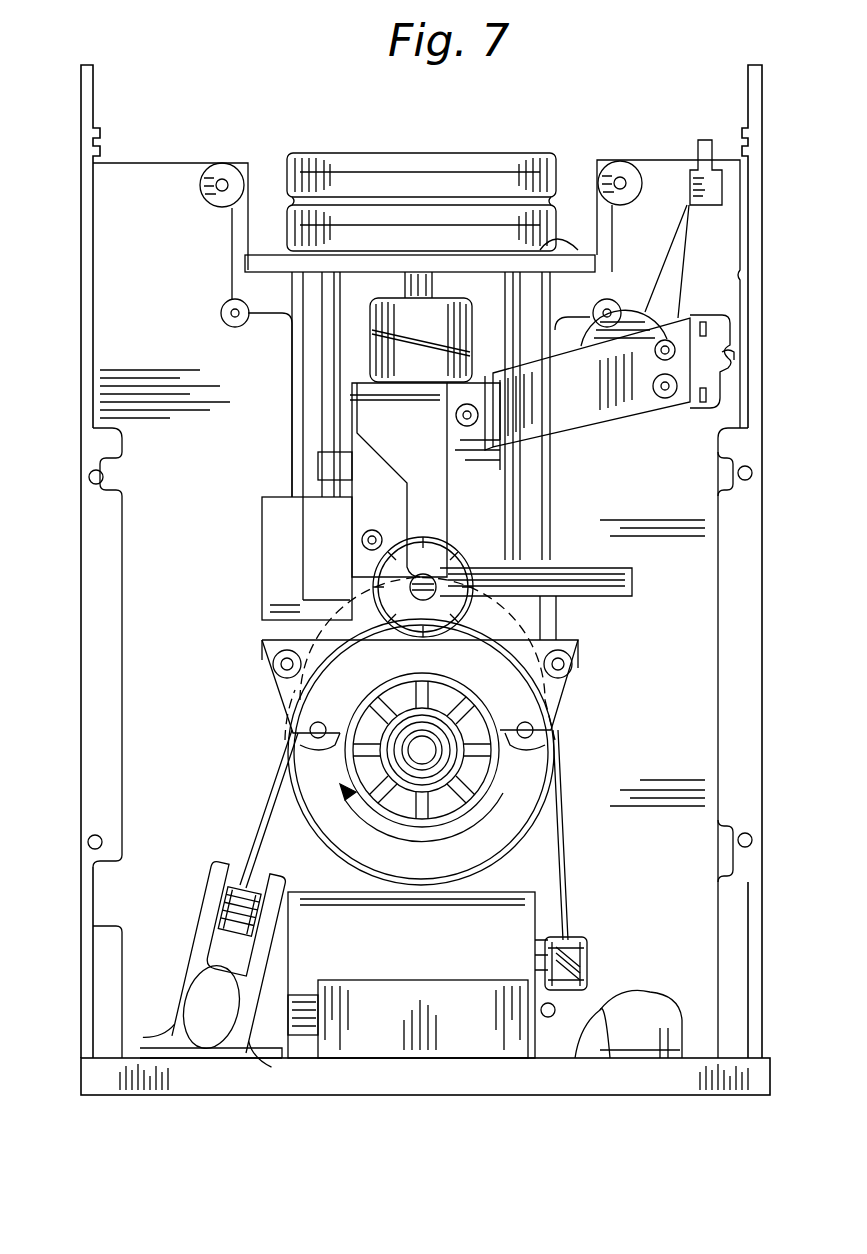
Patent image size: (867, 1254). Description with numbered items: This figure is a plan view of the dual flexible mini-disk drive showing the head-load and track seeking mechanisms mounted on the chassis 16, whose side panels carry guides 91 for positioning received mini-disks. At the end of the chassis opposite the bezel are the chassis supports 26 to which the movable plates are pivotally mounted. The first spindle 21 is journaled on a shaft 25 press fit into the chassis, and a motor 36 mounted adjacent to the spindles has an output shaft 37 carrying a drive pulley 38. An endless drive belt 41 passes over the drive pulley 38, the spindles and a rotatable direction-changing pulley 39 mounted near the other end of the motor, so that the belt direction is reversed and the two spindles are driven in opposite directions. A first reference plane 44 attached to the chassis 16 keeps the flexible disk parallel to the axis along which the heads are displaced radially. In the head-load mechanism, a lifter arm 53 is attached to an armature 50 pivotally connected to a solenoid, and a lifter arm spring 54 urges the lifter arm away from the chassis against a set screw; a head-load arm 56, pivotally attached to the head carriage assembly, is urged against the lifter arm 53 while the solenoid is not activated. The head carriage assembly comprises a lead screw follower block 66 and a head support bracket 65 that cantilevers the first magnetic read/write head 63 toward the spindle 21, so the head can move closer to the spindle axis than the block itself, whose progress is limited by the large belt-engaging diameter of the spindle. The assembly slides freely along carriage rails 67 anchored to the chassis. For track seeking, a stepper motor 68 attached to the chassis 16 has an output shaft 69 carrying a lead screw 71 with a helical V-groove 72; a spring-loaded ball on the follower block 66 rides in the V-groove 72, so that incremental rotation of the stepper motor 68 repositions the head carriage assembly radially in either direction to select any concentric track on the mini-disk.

The chassis 16 is at (695, 773).
The first spindle 21 is at (540, 782).
The shaft 25 is at (422, 750).
The chassis support 26 is at (218, 168).
The motor 36 is at (515, 936).
The output shaft 37 is at (540, 940).
The drive pulley 38 is at (588, 967).
The direction-changing pulley 39 is at (218, 927).
The endless drive belt 41 is at (262, 840).
The first reference plane 44 is at (550, 702).
The armature 50 is at (704, 323).
The lifter arm 53 is at (560, 420).
The lifter arm spring 54 is at (732, 358).
The head-load arm 56 is at (402, 455).
The first magnetic read/write head 63 is at (478, 604).
The head support bracket 65 is at (370, 500).
The lead screw follower block 66 is at (360, 564).
The carriage rails 67 is at (332, 366).
The stepper motor 68 is at (556, 236).
The output shaft 69 is at (436, 288).
The lead screw 71 is at (480, 334).
The V-groove 72 is at (372, 342).
The guides 91 is at (738, 602).